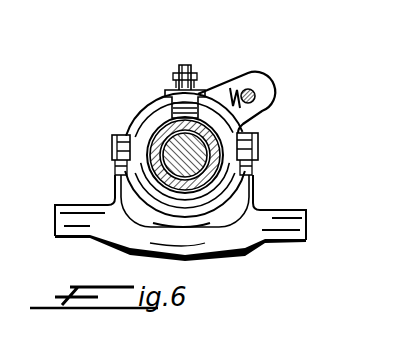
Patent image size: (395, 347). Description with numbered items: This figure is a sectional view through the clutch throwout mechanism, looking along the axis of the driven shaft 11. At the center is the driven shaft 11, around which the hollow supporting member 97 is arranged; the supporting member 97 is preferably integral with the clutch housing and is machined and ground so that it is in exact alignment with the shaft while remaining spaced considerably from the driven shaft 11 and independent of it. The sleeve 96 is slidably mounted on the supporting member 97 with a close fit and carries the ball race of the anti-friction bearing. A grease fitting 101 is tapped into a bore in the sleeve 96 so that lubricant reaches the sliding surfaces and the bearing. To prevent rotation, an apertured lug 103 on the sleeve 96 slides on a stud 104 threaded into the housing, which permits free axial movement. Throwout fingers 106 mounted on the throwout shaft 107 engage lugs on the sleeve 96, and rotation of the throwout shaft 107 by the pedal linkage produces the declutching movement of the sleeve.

The driven shaft 11 is at (185, 153).
The sleeve 96 is at (139, 121).
The hollow supporting member 97 is at (170, 126).
The grease fitting 101 is at (188, 70).
The apertured lug 103 is at (244, 90).
The stud 104 is at (255, 97).
The throwout fingers 106 is at (113, 149).
The throwout shaft 107 is at (290, 225).